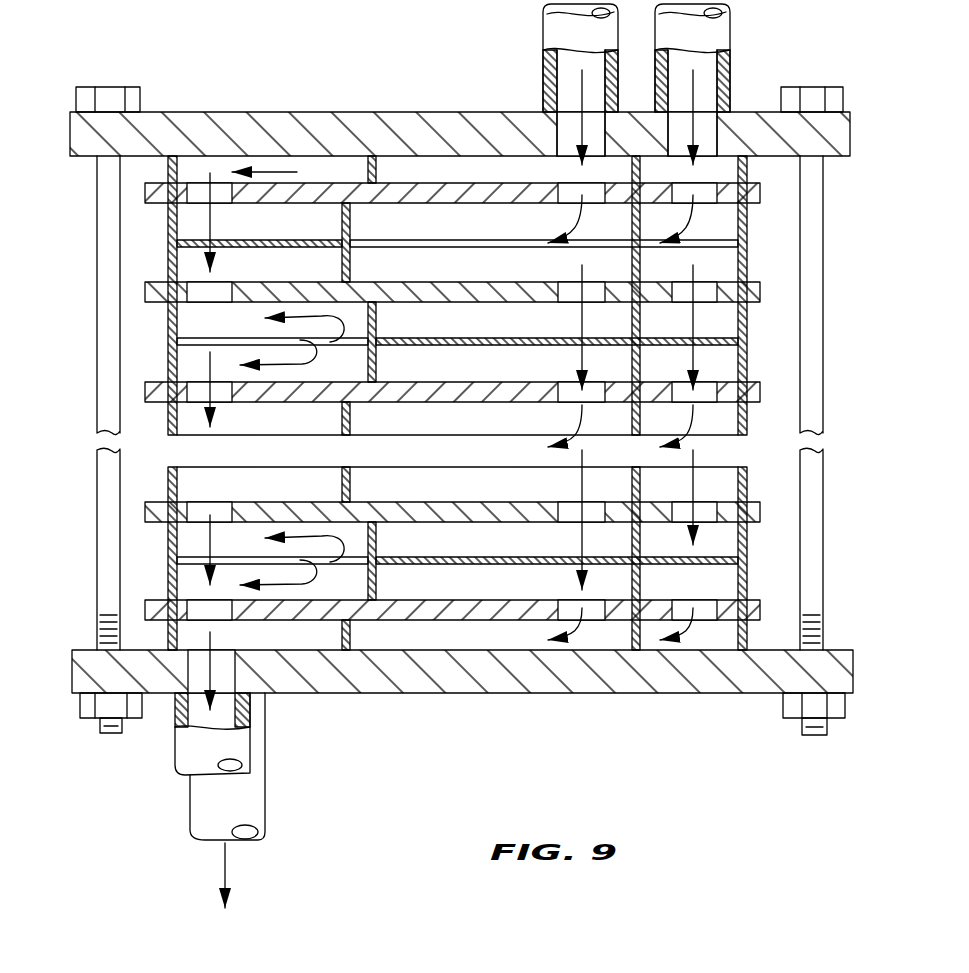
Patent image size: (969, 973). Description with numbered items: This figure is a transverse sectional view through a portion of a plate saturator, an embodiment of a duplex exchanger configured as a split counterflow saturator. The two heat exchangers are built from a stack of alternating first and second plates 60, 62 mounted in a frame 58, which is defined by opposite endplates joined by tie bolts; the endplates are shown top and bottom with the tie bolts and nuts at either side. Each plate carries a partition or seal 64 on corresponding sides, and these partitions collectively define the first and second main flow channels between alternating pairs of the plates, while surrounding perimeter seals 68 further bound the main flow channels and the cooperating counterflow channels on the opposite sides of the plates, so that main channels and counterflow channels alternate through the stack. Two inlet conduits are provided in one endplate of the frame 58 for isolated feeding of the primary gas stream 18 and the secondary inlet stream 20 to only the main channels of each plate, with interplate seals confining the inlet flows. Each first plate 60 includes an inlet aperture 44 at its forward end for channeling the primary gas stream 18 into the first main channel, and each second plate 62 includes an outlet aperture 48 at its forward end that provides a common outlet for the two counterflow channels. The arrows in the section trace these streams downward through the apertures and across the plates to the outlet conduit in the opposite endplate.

The primary gas stream 18 is at (695, 88).
The secondary inlet stream 20 is at (567, 94).
The inlet aperture 44 is at (567, 292).
The outlet aperture 48 is at (227, 512).
The frame 58 is at (275, 112).
The first plates 60 is at (145, 292).
The second plates 62 is at (145, 196).
The partition or seal 64 is at (640, 483).
The perimeter seals 68 is at (168, 228).